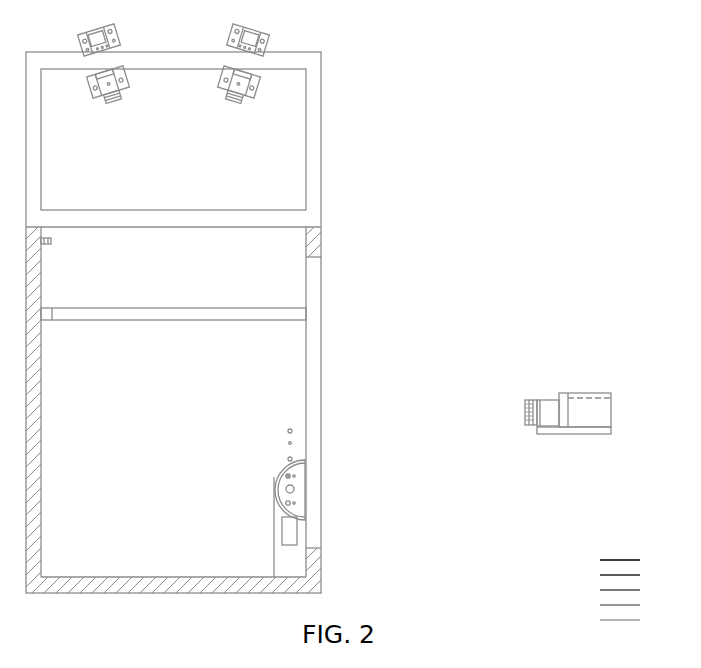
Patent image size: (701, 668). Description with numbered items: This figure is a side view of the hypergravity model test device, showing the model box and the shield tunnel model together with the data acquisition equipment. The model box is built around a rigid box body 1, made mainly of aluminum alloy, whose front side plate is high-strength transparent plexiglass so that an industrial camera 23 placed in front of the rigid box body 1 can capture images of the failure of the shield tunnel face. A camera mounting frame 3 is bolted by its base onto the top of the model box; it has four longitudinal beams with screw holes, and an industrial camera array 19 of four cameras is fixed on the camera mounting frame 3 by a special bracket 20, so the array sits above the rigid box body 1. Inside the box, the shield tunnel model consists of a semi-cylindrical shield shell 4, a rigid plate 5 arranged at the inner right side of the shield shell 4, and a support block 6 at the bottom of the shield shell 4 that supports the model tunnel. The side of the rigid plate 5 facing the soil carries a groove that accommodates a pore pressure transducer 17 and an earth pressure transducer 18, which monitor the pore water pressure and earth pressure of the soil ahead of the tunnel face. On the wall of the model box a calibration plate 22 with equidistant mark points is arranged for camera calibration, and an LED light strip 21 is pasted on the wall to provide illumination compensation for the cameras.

The rigid box body 1 is at (350, 300).
The camera mounting frame 3 is at (254, 182).
The shield shell 4 is at (271, 445).
The rigid plate 5 is at (263, 459).
The support block 6 is at (327, 527).
The pore pressure transducer 17 is at (294, 503).
The earth pressure transducer 18 is at (290, 486).
The industrial camera array 19 is at (174, 92).
The special bracket 20 is at (174, 32).
The LED light strip 21 is at (67, 199).
The calibration plate 22 is at (173, 282).
The industrial camera 23 is at (582, 373).